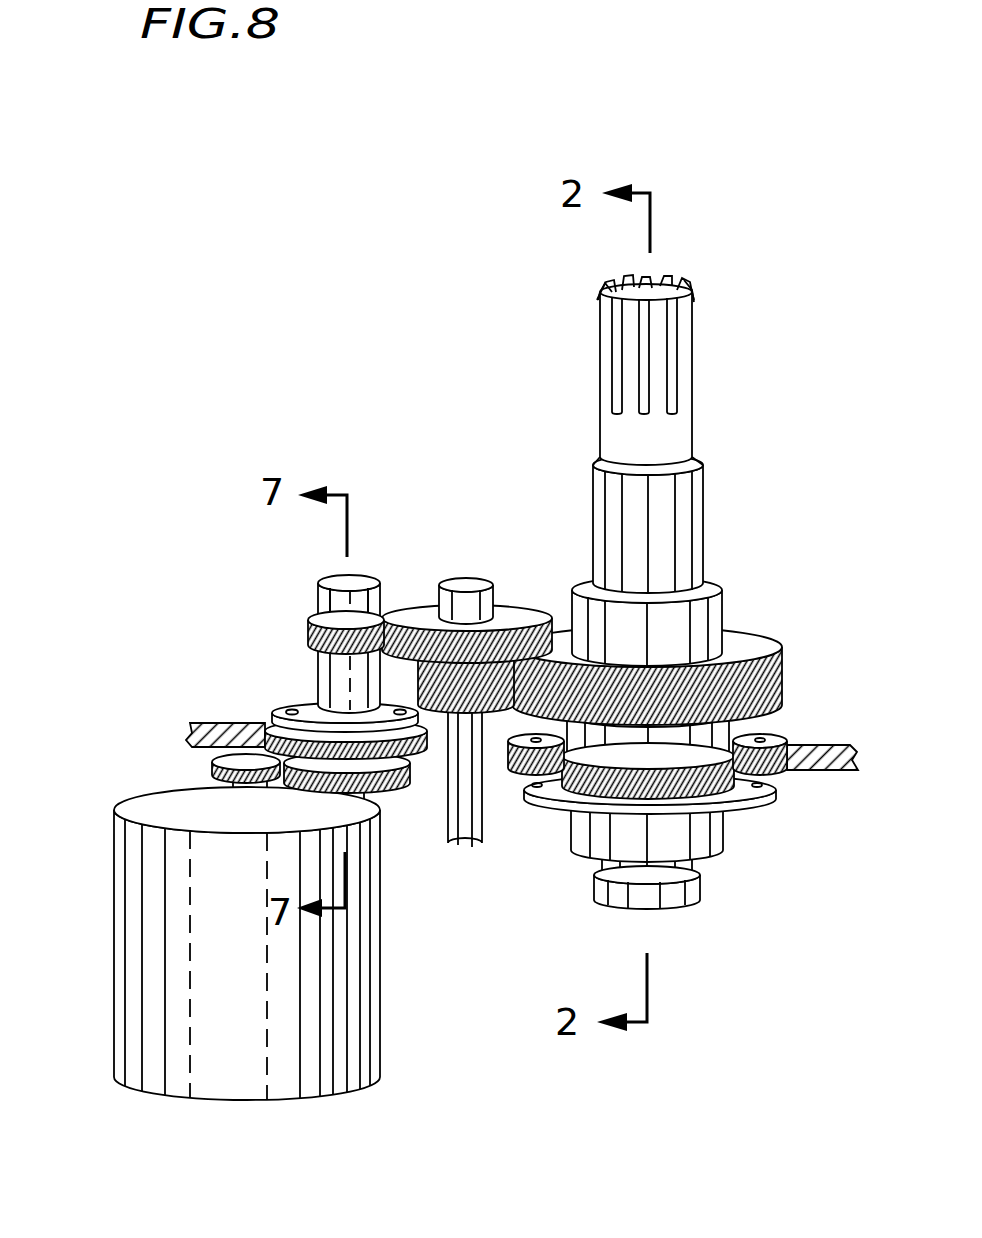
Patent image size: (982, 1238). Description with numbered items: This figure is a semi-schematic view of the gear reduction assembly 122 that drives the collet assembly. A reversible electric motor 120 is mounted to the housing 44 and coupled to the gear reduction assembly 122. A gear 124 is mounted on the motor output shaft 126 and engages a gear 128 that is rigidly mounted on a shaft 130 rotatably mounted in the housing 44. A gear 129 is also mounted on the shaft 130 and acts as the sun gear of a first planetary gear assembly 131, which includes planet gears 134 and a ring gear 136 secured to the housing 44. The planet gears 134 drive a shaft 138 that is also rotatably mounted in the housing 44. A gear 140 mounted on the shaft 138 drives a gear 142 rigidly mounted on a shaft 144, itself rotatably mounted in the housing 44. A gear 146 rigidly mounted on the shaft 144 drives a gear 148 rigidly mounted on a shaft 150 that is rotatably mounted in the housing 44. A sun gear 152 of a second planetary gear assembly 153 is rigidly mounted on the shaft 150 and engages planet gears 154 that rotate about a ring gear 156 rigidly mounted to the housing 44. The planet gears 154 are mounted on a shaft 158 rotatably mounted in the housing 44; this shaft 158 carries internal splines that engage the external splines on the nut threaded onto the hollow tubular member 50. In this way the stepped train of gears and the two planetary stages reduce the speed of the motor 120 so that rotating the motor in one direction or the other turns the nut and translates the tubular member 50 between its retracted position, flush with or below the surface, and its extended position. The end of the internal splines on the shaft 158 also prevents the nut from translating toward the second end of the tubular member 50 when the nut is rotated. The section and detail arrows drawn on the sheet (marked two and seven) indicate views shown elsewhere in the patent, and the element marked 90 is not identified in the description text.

The housing 44 is at (840, 745).
The hollow tubular member 50 is at (603, 418).
The bottom collar 90 is at (662, 912).
The reversible electric motor 120 is at (382, 1068).
The gear reduction assembly 122 is at (466, 638).
The gear 124 is at (215, 780).
The motor output shaft 126 is at (235, 795).
The gear 128 is at (300, 765).
The gear 129 is at (446, 797).
The shaft 130 is at (400, 778).
The first planetary gear assembly 131 is at (248, 627).
The planet gears 134 is at (272, 712).
The ring gear 136 is at (265, 725).
The shaft 138 is at (316, 656).
The gear 140 is at (318, 608).
The gear 142 is at (405, 590).
The shaft 144 is at (468, 557).
The gear 146 is at (490, 713).
The gear 148 is at (780, 650).
The shaft 150 is at (728, 582).
The sun gear 152 is at (660, 785).
The second planetary gear assembly 153 is at (740, 814).
The planet gears 154 is at (775, 770).
The ring gear 156 is at (787, 742).
The shaft 158 is at (722, 848).